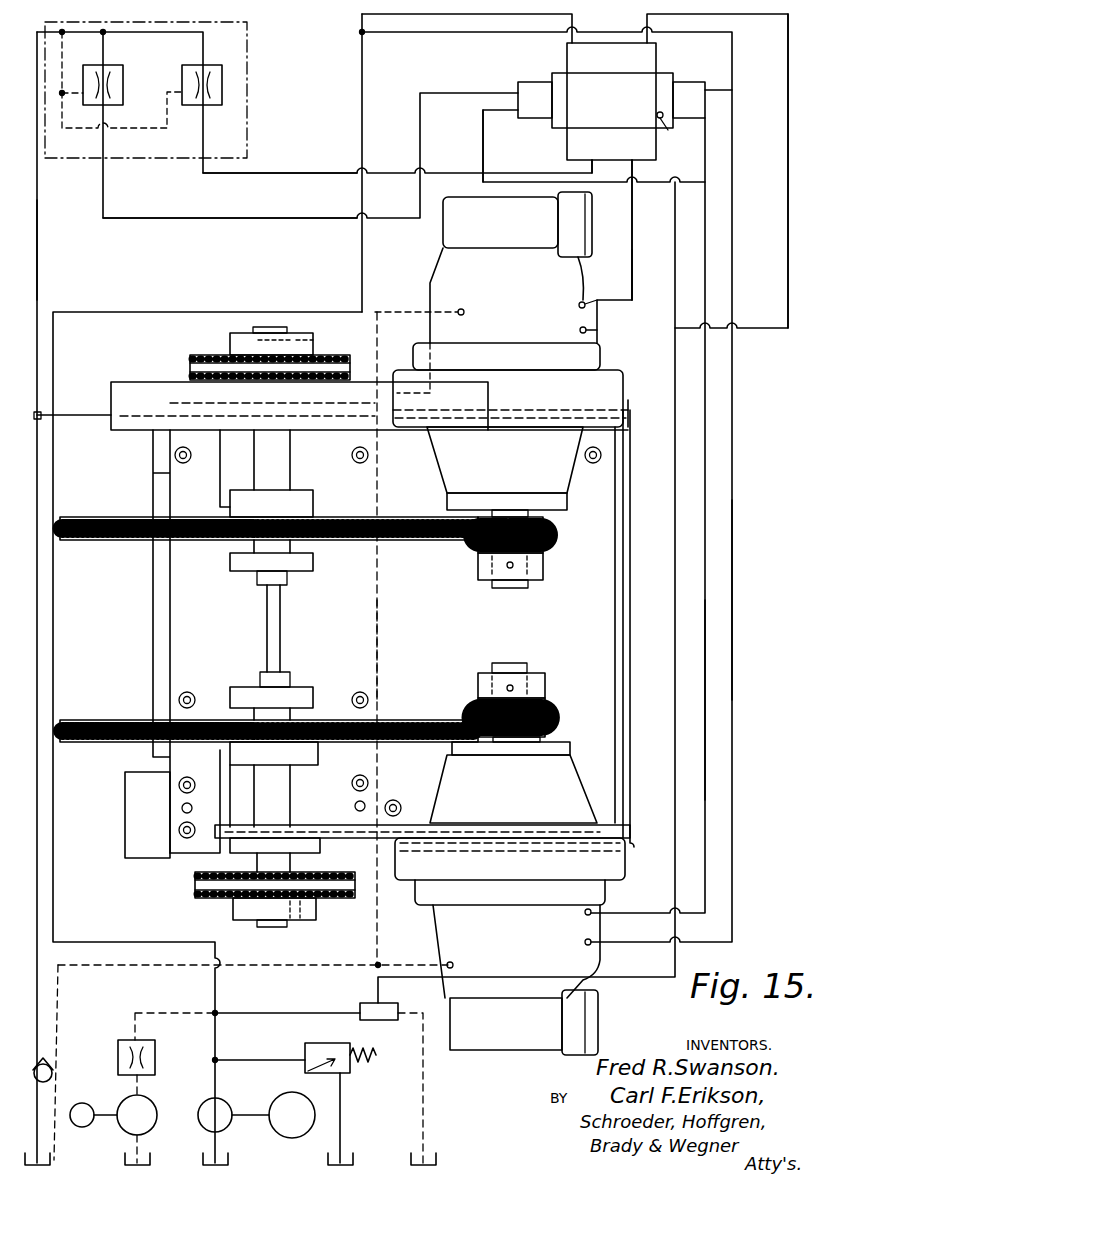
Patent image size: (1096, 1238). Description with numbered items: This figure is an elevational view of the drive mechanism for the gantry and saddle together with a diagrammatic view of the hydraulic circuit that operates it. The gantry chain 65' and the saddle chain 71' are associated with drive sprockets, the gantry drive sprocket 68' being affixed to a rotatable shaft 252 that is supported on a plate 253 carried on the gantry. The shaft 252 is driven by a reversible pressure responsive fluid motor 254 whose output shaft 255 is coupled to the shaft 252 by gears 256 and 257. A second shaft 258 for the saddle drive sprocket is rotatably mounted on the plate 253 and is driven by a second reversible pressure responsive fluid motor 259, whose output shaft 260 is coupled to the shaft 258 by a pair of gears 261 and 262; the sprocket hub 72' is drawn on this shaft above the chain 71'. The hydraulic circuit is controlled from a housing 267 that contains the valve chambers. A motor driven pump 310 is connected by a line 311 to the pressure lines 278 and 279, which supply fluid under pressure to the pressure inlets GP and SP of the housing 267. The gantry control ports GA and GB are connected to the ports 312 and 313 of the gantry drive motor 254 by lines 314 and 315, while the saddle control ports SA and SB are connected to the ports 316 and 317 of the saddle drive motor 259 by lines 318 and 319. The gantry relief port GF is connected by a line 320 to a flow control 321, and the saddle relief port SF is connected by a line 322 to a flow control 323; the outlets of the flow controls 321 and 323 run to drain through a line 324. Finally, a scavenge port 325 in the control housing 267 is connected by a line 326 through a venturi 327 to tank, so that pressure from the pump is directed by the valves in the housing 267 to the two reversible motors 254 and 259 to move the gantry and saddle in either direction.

The flow control 323 is at (252, 90).
The flow control 321 is at (90, 163).
The pressure line 279 is at (362, 92).
The line 322 is at (288, 175).
The line 320 is at (204, 220).
The line 324 is at (40, 287).
The line 311 is at (68, 942).
The pressure inlet SP is at (565, 45).
The saddle control port SA is at (652, 36).
The line 278 is at (733, 62).
The housing 267 is at (612, 116).
The gantry relief port GF is at (517, 92).
The pressure inlet GP is at (706, 98).
The scavenge port 325 is at (659, 112).
The gantry control port GB is at (516, 118).
The gantry control port GA is at (705, 118).
The saddle relief port SF is at (593, 163).
The saddle control port SB is at (634, 165).
The line 318 is at (782, 240).
The line 319 is at (633, 296).
The line 326 is at (674, 584).
The line 314 is at (737, 608).
The line 315 is at (706, 700).
The second reversible pressure responsive fluid motor 259 is at (563, 291).
The port 317 is at (585, 302).
The port 316 is at (580, 330).
The sprocket hub 72' is at (239, 336).
The chain 71' is at (238, 367).
The shaft 258 is at (280, 478).
The gear 262 is at (410, 541).
The gear 261 is at (477, 553).
The output shaft 260 is at (512, 587).
The gear 257 is at (405, 717).
The plate 253 is at (366, 641).
The output shaft 255 is at (522, 663).
The gear 256 is at (545, 720).
The reversible pressure responsive fluid motor 254 is at (540, 806).
The rotatable shaft 252 is at (282, 807).
The chain 65' is at (246, 895).
The gantry drive sprocket 68' is at (266, 924).
The port 313 is at (584, 913).
The port 312 is at (584, 942).
The motor driven pump 310 is at (222, 1110).
The venturi 327 is at (372, 1003).